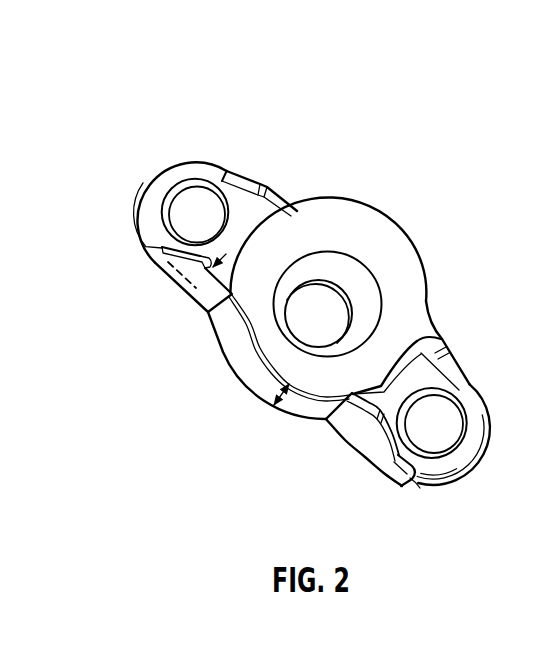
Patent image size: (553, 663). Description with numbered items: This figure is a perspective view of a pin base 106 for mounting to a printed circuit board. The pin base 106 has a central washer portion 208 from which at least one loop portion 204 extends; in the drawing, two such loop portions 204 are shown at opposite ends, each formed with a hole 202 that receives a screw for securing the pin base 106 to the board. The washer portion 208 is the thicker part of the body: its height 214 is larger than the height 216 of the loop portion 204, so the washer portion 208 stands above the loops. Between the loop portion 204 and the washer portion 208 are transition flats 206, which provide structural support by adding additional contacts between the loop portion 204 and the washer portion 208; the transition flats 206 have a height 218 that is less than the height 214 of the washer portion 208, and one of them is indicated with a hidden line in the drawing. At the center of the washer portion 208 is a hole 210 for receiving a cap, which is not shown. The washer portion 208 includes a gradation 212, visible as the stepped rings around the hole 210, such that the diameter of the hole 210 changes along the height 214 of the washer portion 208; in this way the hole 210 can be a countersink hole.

The pin base 106 is at (200, 97).
The hole 202 is at (189, 203).
The loop portion 204 is at (147, 212).
The transition flats 206 is at (253, 197).
The washer portion 208 is at (297, 368).
The hole 210 is at (326, 325).
The gradation 212 is at (302, 270).
The height 214 is at (283, 396).
The height 216 is at (419, 479).
The height 218 is at (196, 289).